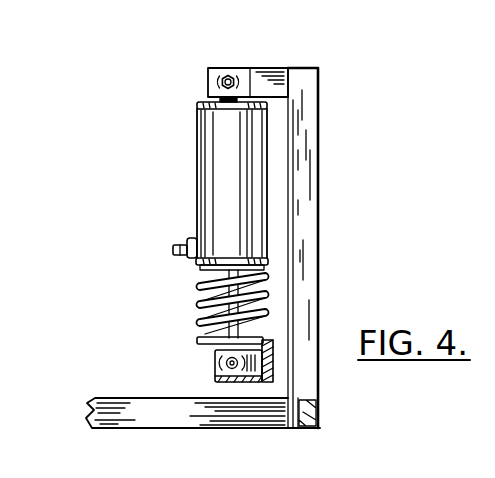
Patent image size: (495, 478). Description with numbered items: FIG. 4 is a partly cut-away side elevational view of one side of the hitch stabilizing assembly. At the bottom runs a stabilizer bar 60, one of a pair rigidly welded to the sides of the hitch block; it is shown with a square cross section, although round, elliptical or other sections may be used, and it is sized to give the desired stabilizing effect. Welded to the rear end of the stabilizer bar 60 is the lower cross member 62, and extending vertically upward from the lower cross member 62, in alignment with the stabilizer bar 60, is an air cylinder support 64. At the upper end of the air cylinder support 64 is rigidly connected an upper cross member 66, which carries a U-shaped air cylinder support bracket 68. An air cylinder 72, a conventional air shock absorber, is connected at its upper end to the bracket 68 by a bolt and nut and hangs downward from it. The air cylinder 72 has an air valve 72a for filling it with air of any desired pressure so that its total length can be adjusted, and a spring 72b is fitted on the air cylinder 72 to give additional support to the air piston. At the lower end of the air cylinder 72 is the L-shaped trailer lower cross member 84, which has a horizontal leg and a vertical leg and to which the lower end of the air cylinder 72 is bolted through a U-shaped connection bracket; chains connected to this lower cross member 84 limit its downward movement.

The stabilizer bar 60 is at (192, 418).
The lower cross member 62 is at (313, 430).
The air cylinder support 64 is at (305, 207).
The upper cross member 66 is at (275, 69).
The U-shaped air cylinder support bracket 68 is at (213, 69).
The air cylinder 72 is at (197, 150).
The air valve 72a is at (182, 245).
The spring 72b is at (197, 301).
The L-shaped trailer lower cross member 84 is at (215, 378).